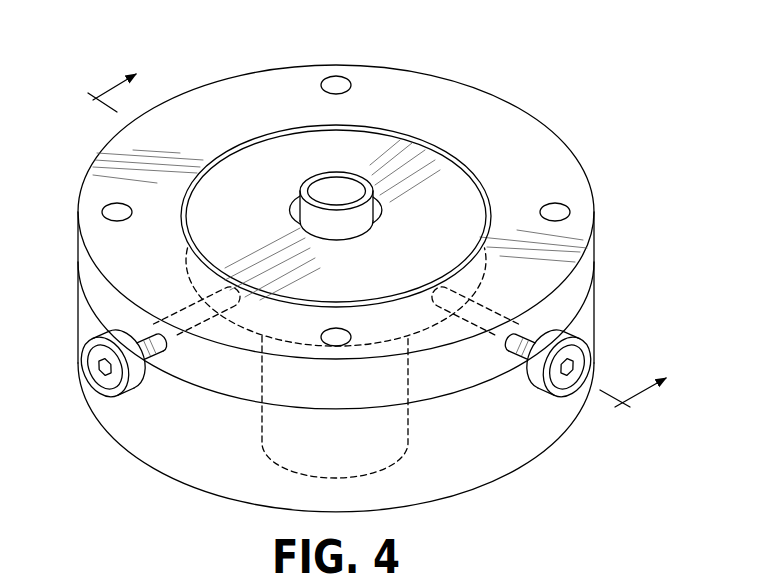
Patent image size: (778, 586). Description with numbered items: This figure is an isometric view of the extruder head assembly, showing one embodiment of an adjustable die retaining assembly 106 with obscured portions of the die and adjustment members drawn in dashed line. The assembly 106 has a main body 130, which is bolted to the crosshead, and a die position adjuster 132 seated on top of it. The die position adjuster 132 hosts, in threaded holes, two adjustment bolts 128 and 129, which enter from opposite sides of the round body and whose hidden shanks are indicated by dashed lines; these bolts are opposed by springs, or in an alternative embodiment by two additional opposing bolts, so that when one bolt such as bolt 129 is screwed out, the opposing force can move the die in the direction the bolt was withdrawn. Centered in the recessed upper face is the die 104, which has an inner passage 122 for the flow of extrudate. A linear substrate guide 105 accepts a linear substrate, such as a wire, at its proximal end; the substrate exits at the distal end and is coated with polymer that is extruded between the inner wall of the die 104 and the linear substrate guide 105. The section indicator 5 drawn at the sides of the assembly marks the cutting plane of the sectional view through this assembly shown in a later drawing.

The die 104 is at (472, 172).
The linear substrate guide 105 is at (326, 173).
The adjustable die retaining assembly 106 is at (485, 69).
The inner passage 122 is at (382, 208).
The adjustment bolt 128 is at (583, 335).
The adjustment bolt 129 is at (98, 337).
The main body 130 is at (520, 467).
The die position adjuster 132 is at (587, 177).
The section line 5- 5 is at (367, 253).